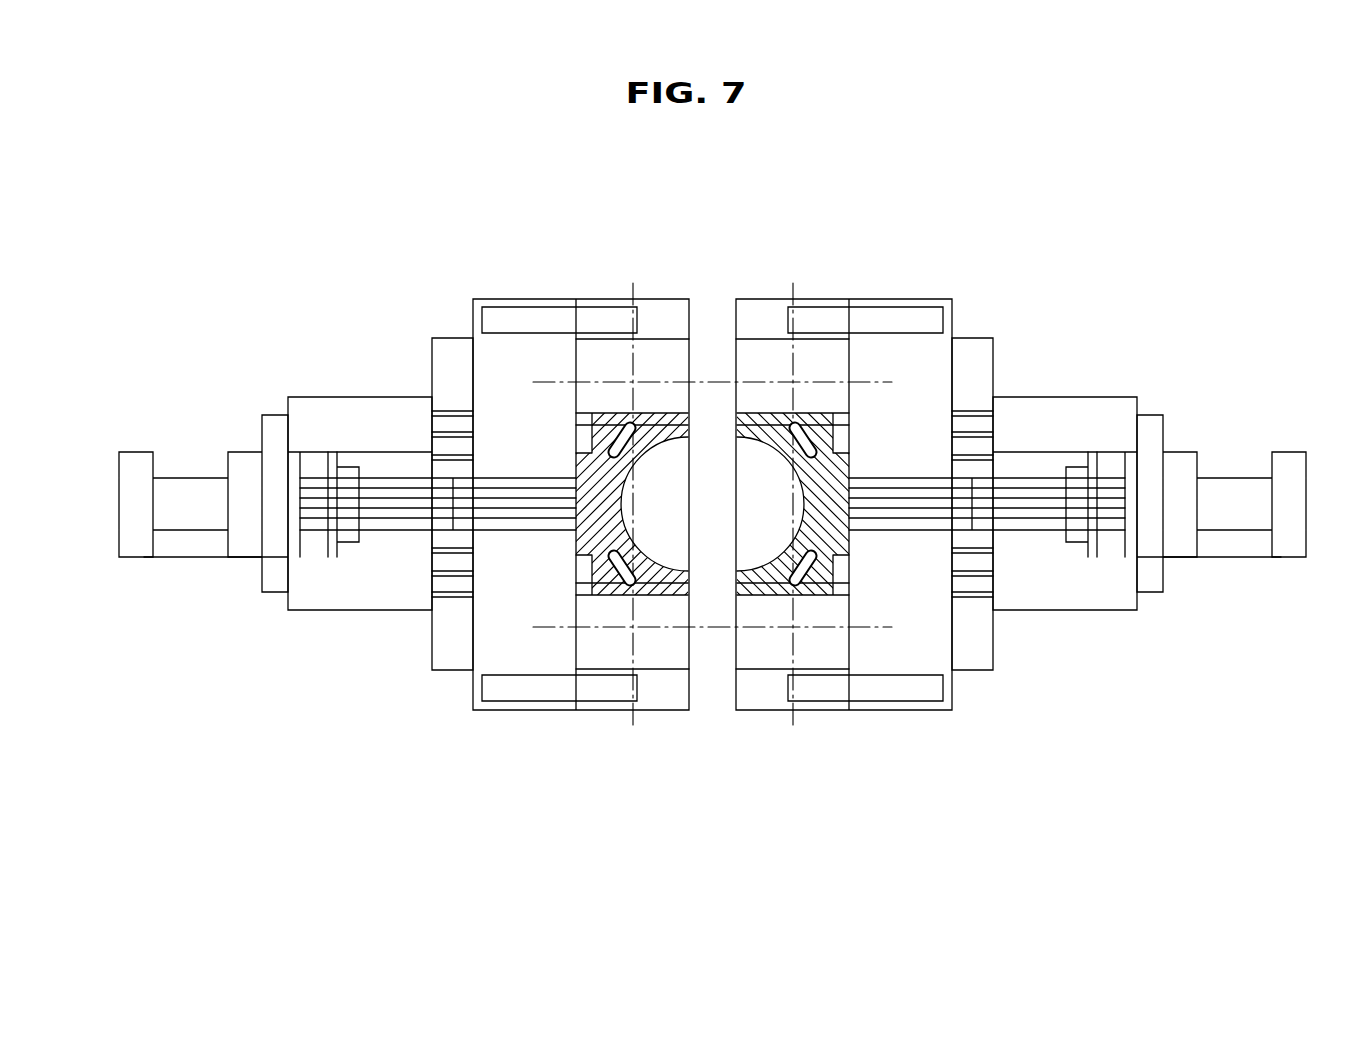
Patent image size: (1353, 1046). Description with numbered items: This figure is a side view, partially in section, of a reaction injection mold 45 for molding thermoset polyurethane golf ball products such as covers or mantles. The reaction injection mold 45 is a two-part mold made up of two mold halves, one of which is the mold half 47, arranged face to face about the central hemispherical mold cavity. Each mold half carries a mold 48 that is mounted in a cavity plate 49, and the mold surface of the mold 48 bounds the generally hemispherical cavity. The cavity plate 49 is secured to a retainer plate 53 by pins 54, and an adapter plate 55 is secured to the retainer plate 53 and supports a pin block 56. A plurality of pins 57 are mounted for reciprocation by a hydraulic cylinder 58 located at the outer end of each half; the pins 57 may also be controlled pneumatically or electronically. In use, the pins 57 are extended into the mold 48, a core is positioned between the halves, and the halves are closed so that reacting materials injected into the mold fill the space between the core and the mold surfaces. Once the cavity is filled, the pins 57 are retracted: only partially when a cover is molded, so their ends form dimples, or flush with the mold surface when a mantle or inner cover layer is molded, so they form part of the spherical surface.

The reaction injection mold 45 is at (822, 262).
The mold half 47 is at (520, 298).
The mold 48 is at (662, 584).
The cavity plate 49 is at (602, 298).
The retainer plate 53 is at (515, 711).
The pins 54 is at (473, 690).
The adapter plate 55 is at (460, 337).
The pin block 56 is at (337, 406).
The pins 57 is at (377, 530).
The hydraulic cylinder 58 is at (190, 485).